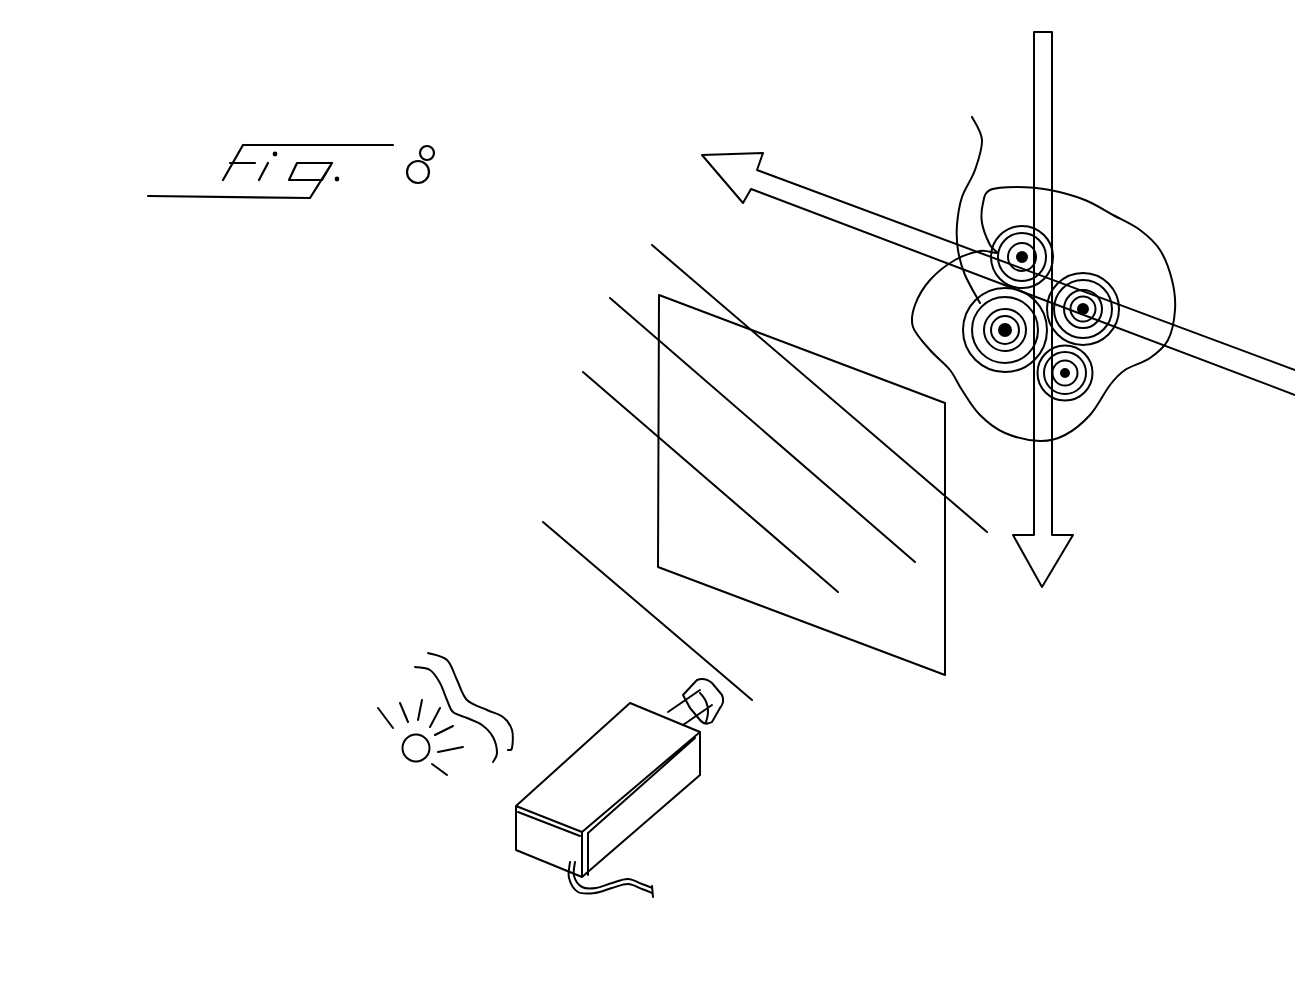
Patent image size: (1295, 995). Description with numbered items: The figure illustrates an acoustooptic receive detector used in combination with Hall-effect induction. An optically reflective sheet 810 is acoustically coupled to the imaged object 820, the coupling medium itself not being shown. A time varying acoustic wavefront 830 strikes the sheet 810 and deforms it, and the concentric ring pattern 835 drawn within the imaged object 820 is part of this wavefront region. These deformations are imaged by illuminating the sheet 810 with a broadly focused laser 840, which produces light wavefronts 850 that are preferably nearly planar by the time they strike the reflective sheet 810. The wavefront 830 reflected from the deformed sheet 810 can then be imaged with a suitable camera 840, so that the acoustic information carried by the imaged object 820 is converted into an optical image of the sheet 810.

The optically reflective sheet 810 is at (933, 645).
The imaged object 820 is at (1118, 352).
The acoustic wavefront 830 is at (1000, 257).
The target pattern 835 is at (997, 329).
The laser 840 is at (408, 753).
The light wavefronts 850 is at (655, 247).